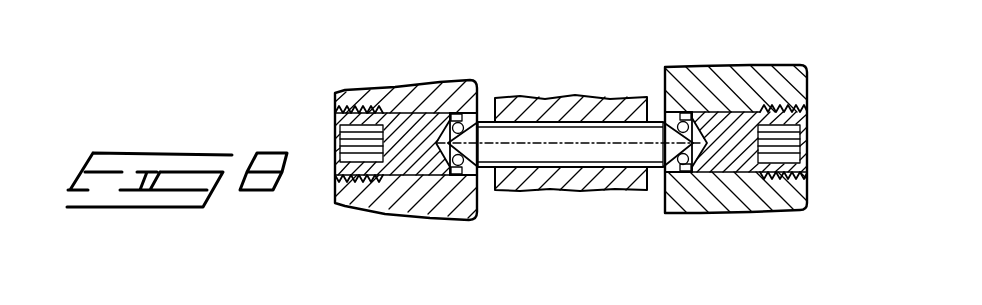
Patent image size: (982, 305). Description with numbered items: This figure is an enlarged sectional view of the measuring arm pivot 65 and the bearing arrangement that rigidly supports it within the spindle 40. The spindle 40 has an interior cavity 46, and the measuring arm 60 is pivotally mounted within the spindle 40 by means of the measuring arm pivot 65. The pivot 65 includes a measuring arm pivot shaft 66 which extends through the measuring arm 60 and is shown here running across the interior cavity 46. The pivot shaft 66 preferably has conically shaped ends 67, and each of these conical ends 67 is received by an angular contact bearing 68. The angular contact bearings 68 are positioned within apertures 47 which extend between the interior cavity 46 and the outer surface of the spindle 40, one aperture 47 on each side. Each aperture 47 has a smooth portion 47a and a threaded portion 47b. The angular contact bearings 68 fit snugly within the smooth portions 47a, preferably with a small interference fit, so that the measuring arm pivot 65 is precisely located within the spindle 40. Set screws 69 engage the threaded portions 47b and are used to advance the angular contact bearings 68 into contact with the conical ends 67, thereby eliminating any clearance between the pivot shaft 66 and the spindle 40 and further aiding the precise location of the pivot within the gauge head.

The measuring arm pivot 65 is at (552, 68).
The spindle 40 is at (352, 206).
The interior cavity 46 is at (568, 175).
The apertures 47 is at (481, 108).
The smooth portion 47a is at (404, 180).
The threaded portion 47b is at (335, 118).
The measuring arm 60 is at (603, 97).
The measuring arm pivot shaft 66 is at (519, 190).
The conically shaped ends 67 is at (433, 110).
The angular contact bearings 68 is at (466, 183).
The set screws 69 is at (336, 171).